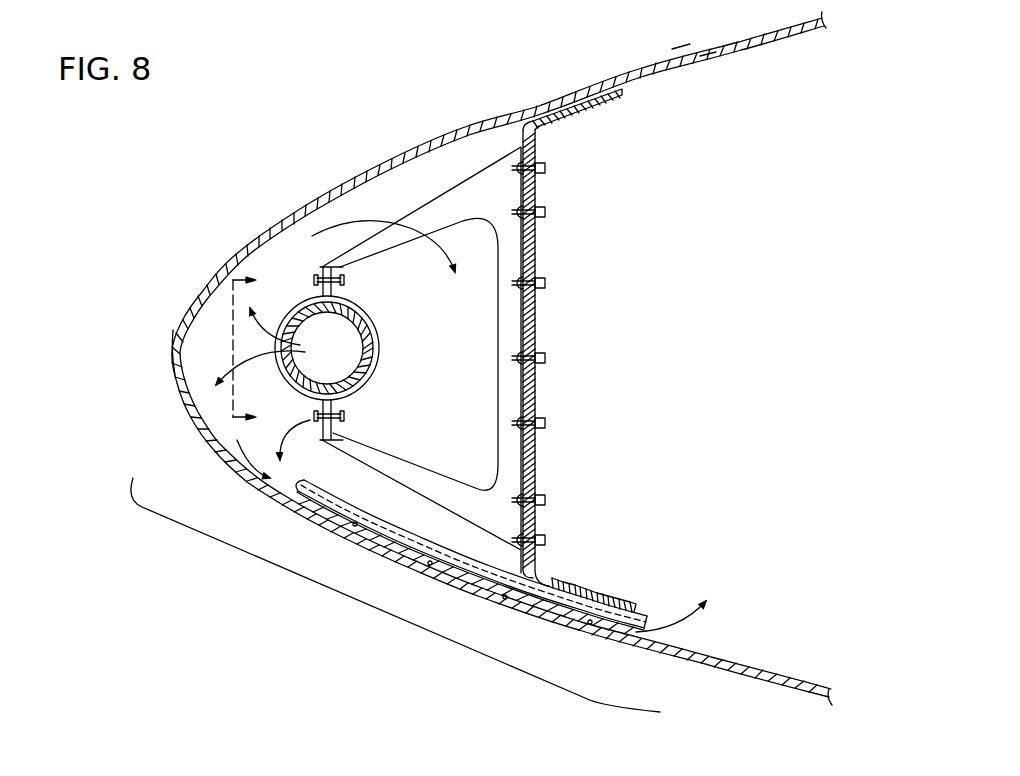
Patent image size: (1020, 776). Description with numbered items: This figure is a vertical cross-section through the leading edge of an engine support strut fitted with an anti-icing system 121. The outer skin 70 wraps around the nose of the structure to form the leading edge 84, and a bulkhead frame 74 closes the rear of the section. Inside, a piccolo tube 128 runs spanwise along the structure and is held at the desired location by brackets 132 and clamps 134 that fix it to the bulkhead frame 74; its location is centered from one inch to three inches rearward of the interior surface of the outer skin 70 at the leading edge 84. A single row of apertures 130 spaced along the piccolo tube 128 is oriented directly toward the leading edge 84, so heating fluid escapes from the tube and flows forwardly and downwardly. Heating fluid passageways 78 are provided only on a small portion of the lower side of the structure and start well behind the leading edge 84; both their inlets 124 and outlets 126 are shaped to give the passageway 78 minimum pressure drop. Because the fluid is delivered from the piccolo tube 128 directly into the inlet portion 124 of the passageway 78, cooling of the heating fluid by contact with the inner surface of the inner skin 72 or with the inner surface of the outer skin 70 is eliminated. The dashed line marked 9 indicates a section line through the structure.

The outer skin 70 is at (250, 250).
The leading edge 84 is at (175, 352).
The section line 9- 9 is at (254, 348).
The brackets 132 is at (473, 176).
The clamps 134 is at (303, 300).
The piccolo tube fluid distribution device 128 is at (356, 313).
The apertures 130 is at (292, 356).
The bulkhead frame 74 is at (540, 325).
The outlets 126 is at (652, 582).
The heating fluid passageways 78 is at (405, 553).
The inner skin 72 is at (330, 520).
The inlets 124 is at (289, 492).
The anti-icing system 121 is at (395, 595).